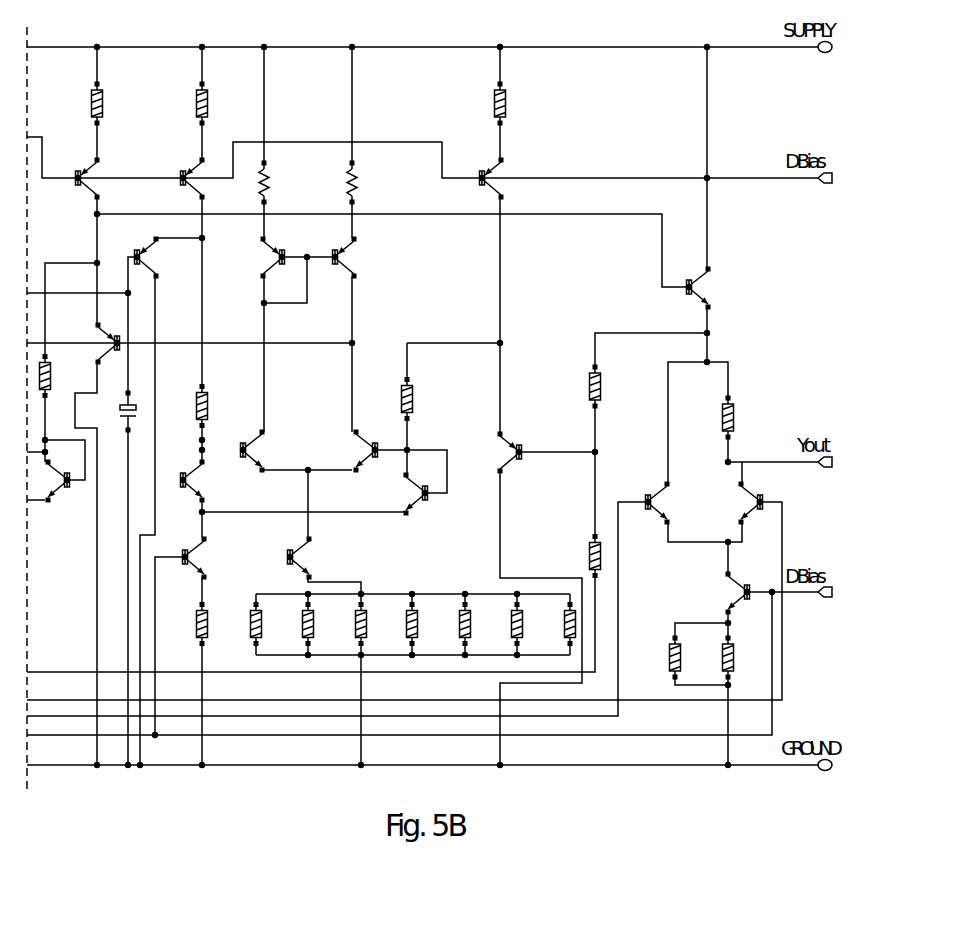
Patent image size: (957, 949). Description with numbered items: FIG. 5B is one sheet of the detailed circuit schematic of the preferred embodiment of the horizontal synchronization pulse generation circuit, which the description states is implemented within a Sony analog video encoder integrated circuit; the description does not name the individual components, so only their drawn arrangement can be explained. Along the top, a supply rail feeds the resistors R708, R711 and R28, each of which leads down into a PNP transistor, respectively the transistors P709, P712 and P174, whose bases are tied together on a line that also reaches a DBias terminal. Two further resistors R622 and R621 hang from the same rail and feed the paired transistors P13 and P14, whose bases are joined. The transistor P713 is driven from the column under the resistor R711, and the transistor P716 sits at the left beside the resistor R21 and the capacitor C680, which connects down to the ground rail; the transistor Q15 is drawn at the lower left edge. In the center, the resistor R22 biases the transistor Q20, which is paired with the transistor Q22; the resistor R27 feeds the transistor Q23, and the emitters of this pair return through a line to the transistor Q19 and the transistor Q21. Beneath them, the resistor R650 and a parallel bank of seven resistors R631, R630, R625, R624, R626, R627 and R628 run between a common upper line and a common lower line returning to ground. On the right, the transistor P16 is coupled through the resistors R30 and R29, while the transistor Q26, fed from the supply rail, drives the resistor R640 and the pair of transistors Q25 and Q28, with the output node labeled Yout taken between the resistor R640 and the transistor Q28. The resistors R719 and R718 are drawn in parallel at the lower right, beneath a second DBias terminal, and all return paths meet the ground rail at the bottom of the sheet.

The resistor R708 is at (76, 104).
The resistor R711 is at (181, 104).
The resistor R28 is at (483, 104).
The PNP transistor P709 is at (76, 169).
The PNP transistor P712 is at (180, 169).
The PNP transistor P174 is at (479, 169).
The resistor R622 is at (286, 183).
The resistor R621 is at (375, 183).
The PNP transistor P713 is at (133, 252).
The PNP transistor P13 is at (282, 249).
The PNP transistor P14 is at (336, 249).
The PNP transistor P716 is at (86, 341).
The resistor R21 is at (61, 376).
The capacitor C680 is at (107, 412).
The resistor R22 is at (186, 406).
The NPN transistor Q20 is at (246, 443).
The NPN transistor Q22 is at (371, 443).
The resistor R27 is at (423, 399).
The NPN transistor Q23 is at (423, 487).
The NPN transistor Q15 is at (64, 476).
The NPN transistor Q19 is at (186, 551).
The NPN transistor Q21 is at (292, 551).
The resistor R650 is at (183, 624).
The resistor R631 is at (236, 624).
The resistor R630 is at (288, 624).
The resistor R625 is at (341, 624).
The resistor R624 is at (392, 624).
The resistor R626 is at (445, 624).
The resistor R627 is at (497, 624).
The resistor R628 is at (550, 624).
The PNP transistor P16 is at (519, 446).
The resistor R30 is at (579, 387).
The resistor R29 is at (579, 556).
The NPN transistor Q26 is at (691, 280).
The resistor R640 is at (707, 418).
The NPN transistor Q25 is at (651, 496).
The NPN transistor Q28 is at (759, 496).
The resistor R719 is at (655, 658).
The resistor R718 is at (708, 658).